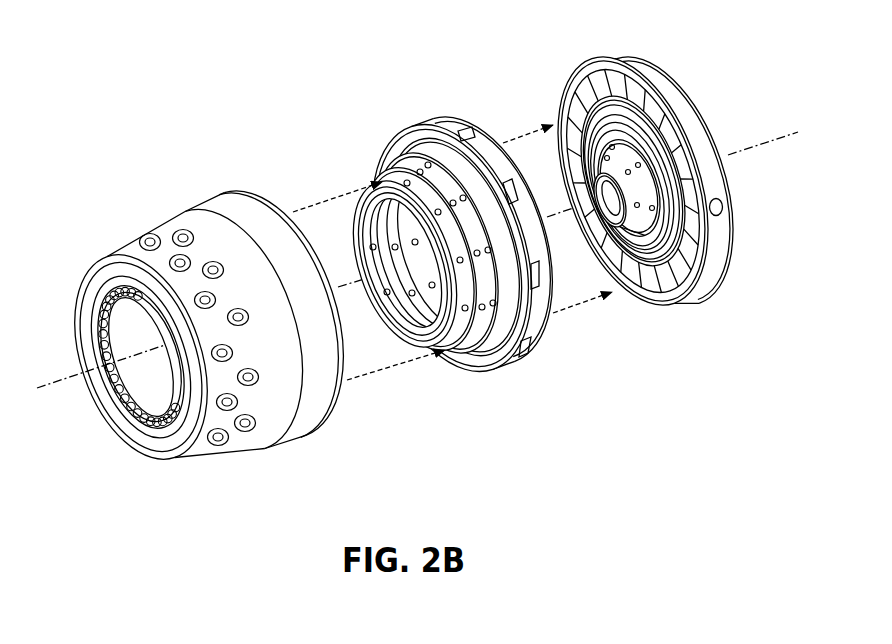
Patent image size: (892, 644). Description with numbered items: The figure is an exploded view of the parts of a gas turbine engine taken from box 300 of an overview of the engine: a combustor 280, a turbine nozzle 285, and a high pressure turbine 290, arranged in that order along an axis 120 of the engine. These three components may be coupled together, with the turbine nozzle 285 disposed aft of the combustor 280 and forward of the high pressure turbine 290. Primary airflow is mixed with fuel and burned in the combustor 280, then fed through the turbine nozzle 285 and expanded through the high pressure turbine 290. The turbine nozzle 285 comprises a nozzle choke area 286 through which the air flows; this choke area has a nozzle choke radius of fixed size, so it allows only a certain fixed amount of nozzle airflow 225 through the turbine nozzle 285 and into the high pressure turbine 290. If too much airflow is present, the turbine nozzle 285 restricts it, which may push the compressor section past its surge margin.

The box 300 is at (417, 263).
The rotational axis 120 is at (780, 135).
The combustor 280 is at (239, 443).
The turbine nozzle 285 is at (489, 380).
The nozzle choke area 286 is at (416, 146).
The high pressure turbine 290 is at (583, 62).
The nozzle airflow 225 is at (325, 205).